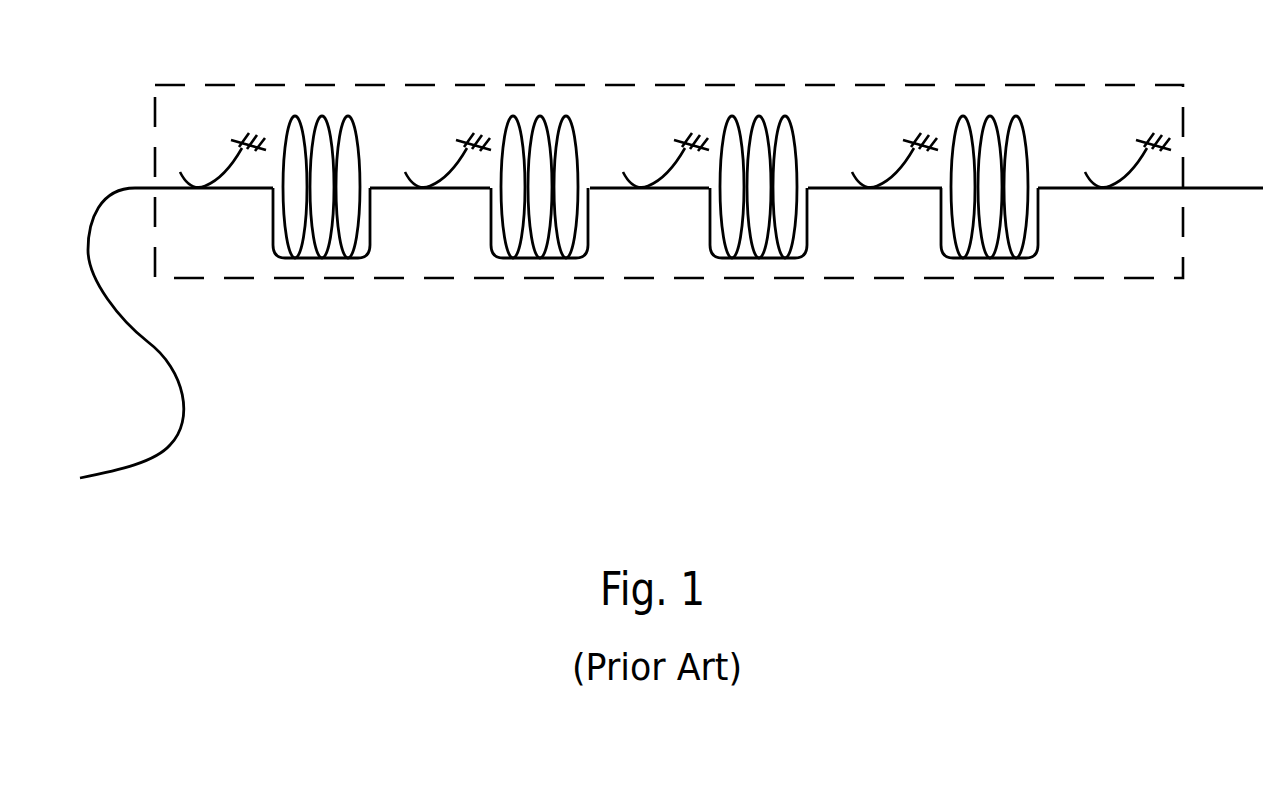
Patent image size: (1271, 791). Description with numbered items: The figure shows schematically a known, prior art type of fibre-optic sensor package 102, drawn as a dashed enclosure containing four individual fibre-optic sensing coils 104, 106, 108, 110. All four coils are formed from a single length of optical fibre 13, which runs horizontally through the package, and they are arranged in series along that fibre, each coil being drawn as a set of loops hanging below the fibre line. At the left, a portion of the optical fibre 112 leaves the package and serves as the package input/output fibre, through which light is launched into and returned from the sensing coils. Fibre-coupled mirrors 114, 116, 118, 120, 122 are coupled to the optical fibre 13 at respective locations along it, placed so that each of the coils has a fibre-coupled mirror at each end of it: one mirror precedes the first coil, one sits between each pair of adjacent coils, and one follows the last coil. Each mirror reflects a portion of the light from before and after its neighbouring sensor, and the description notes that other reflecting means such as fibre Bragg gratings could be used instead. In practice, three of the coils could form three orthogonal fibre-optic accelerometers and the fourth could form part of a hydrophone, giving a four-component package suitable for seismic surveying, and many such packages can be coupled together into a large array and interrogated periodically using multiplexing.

The optical fibre 13 is at (1240, 190).
The fibre-optic sensor package 102 is at (1098, 282).
The fibre-optic sensing coil 104 is at (318, 112).
The fibre-optic sensing coil 106 is at (538, 112).
The fibre-optic sensing coil 108 is at (756, 112).
The fibre-optic sensing coil 110 is at (988, 112).
The package input/output fibre 112 is at (115, 313).
The fibre-coupled mirror 114 is at (242, 135).
The fibre-coupled mirror 116 is at (467, 135).
The fibre-coupled mirror 118 is at (685, 135).
The fibre-coupled mirror 120 is at (914, 135).
The fibre-coupled mirror 122 is at (1147, 135).